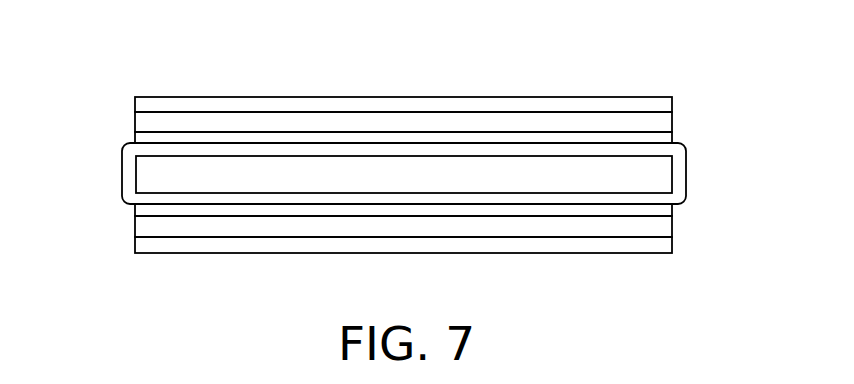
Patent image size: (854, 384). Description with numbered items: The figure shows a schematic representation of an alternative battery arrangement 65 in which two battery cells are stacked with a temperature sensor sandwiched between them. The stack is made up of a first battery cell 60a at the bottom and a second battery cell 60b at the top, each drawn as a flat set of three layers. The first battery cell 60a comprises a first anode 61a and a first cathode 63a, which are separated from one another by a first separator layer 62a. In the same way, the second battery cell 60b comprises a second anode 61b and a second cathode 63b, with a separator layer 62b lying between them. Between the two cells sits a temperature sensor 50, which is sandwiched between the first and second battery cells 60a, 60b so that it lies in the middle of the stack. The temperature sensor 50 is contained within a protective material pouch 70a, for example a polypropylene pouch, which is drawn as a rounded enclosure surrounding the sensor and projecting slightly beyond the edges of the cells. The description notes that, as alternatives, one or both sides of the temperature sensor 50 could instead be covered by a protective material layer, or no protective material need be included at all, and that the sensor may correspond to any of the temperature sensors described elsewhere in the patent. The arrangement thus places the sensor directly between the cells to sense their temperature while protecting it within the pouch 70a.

The battery arrangement 65 is at (452, 68).
The second battery cell 60b is at (434, 93).
The second cathode 63b is at (180, 103).
The separator layer 62b is at (238, 120).
The second anode 61b is at (296, 140).
The protective material pouch 70a is at (123, 171).
The temperature sensor 50 is at (662, 172).
The first battery cell 60a is at (434, 257).
The first cathode 63a is at (505, 210).
The first separator layer 62a is at (563, 230).
The first anode 61a is at (623, 247).